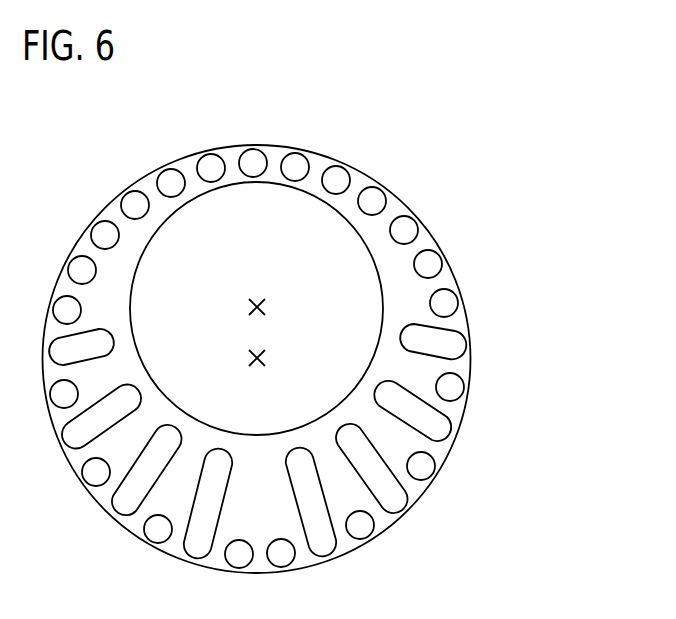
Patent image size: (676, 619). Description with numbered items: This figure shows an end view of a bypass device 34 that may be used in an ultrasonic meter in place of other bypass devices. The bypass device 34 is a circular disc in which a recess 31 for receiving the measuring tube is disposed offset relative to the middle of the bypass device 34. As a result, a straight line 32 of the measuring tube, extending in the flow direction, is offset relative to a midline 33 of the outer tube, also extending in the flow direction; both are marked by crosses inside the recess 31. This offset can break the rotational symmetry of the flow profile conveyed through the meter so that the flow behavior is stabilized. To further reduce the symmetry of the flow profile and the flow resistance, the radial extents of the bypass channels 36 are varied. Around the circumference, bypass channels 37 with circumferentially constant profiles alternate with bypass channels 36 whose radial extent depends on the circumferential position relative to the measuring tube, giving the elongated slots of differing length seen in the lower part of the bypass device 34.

The recess 31 is at (384, 257).
The straight line of the measuring tube 32 is at (267, 290).
The midline of the outer tube 33 is at (273, 357).
The bypass device 34 is at (485, 300).
The bypass channels 36 is at (442, 427).
The bypass channels 37 is at (452, 386).